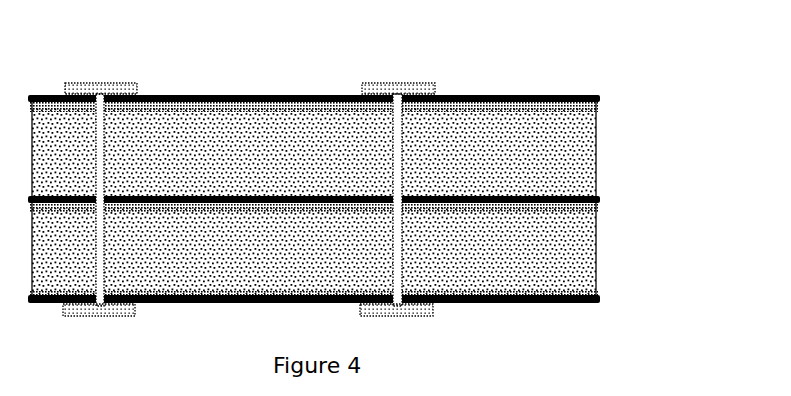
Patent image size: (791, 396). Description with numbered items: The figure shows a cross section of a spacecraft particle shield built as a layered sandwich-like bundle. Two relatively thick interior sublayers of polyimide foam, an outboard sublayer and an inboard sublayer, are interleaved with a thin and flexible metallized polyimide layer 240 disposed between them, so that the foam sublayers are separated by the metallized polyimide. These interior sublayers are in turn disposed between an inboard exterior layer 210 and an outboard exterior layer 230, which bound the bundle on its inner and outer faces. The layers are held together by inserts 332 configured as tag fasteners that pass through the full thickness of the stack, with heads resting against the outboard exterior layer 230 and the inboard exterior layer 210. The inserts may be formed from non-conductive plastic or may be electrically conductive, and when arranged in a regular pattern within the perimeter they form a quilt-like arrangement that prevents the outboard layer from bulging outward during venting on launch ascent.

The insert 332 is at (118, 82).
The outboard exterior layer 230 is at (598, 97).
The metallized polyimide layer 240 is at (598, 198).
The inboard exterior layer 210 is at (598, 302).